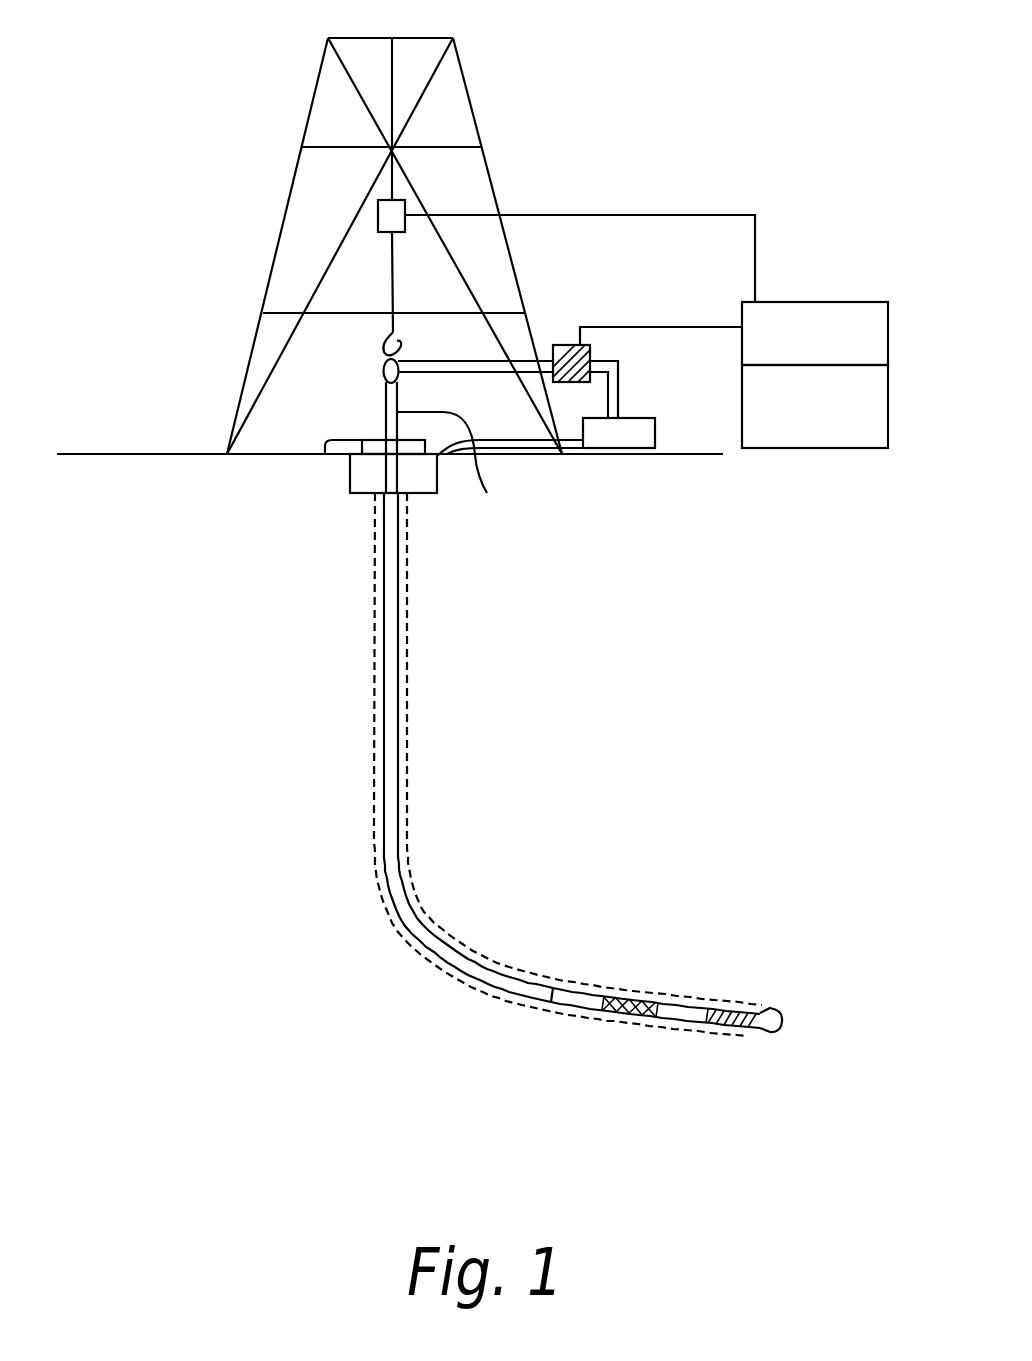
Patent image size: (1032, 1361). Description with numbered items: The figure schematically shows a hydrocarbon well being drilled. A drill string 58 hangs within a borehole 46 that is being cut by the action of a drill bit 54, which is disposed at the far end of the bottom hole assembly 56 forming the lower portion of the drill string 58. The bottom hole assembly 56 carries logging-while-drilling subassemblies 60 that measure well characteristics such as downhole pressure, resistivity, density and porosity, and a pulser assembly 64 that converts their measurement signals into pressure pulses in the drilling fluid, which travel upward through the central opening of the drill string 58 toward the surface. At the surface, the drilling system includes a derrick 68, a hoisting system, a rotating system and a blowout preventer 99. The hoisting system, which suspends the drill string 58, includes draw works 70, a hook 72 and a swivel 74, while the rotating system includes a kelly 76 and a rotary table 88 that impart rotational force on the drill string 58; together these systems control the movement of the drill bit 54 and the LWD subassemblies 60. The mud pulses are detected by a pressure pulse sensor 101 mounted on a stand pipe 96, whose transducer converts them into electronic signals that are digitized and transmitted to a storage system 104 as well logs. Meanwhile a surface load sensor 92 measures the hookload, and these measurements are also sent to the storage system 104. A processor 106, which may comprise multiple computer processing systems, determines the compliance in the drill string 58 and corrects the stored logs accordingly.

The derrick 68 is at (484, 157).
The draw works 70 is at (392, 288).
The surface load sensor 92 is at (378, 222).
The hook 72 is at (380, 343).
The swivel 74 is at (384, 372).
The pressure pulse sensor 101 is at (560, 345).
The stand pipe 96 is at (622, 372).
The storage system 104 is at (846, 353).
The processor 106 is at (846, 428).
The rotary table 88 is at (322, 455).
The blowout preventer 99 is at (350, 495).
The kelly 76 is at (469, 470).
The borehole 46 is at (377, 605).
The drill string 58 is at (398, 603).
The pulser assembly 64 is at (632, 1015).
The logging-while-drilling subassemblies 60 is at (731, 1010).
The drill bit 54 is at (786, 1026).
The bottom hole assembly 56 is at (777, 1122).